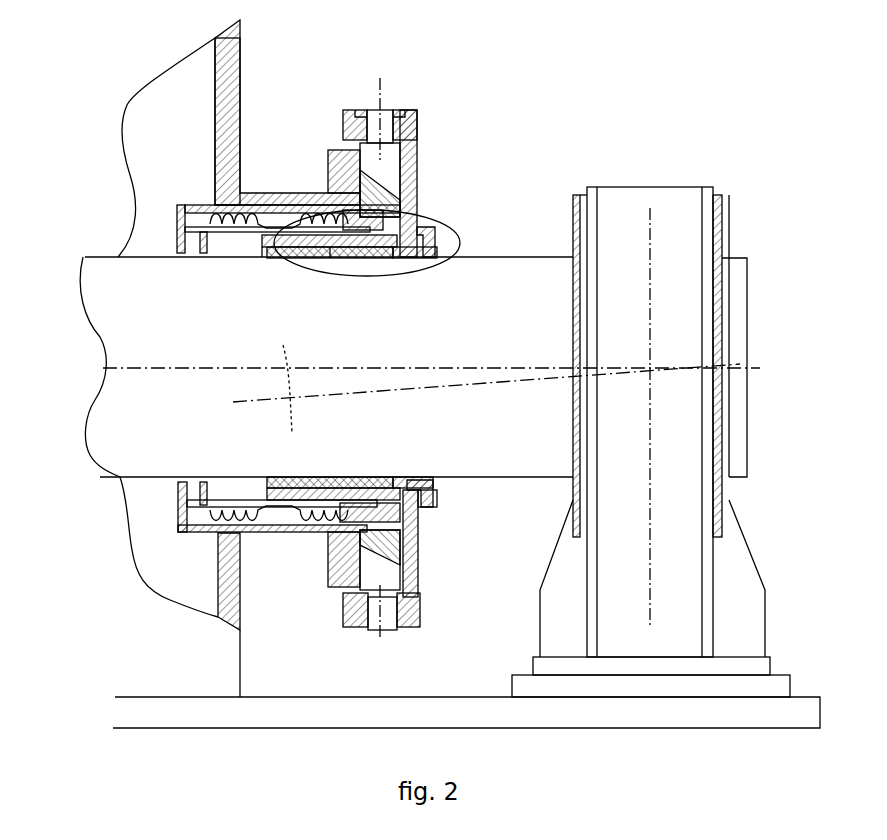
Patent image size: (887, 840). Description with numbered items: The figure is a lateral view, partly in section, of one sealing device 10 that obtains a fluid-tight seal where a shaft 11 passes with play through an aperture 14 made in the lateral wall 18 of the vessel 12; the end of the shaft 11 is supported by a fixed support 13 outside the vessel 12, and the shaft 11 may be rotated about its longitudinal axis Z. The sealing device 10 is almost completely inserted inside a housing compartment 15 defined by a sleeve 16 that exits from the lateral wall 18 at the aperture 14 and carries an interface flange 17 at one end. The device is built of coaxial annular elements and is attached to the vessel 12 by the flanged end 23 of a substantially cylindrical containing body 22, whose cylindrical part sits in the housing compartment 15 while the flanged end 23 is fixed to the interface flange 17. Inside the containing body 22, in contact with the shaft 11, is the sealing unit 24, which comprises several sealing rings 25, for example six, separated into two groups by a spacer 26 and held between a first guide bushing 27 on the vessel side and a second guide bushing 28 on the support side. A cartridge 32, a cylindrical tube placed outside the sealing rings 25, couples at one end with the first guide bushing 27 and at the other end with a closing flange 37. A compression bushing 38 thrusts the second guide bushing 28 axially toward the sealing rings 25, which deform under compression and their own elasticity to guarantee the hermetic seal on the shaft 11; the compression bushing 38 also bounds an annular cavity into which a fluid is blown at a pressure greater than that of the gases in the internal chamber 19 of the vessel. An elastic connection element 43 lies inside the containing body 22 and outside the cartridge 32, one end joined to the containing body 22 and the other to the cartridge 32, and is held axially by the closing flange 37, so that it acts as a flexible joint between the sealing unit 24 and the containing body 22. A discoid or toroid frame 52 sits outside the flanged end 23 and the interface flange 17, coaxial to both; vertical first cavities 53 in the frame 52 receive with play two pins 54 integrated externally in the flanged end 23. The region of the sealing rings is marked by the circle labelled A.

The sealing device 10 is at (520, 135).
The shaft 11 is at (118, 338).
The vessel 12 is at (245, 615).
The fixed support 13 is at (678, 205).
The aperture 14 is at (230, 535).
The housing compartment 15 is at (265, 535).
The sleeve 16 is at (293, 535).
The interface flange 17 is at (340, 170).
The lateral wall 18 is at (232, 38).
The internal chamber 19 is at (215, 122).
The containing body 22 is at (178, 203).
The flanged end 23 is at (390, 158).
The sealing unit 24 is at (255, 245).
The sealing rings 25 is at (292, 258).
The spacer 26 is at (335, 258).
The first guide bushing 27 is at (265, 480).
The second guide bushing 28 is at (385, 480).
The cartridge 32 is at (285, 248).
The closing flange 37 is at (393, 222).
The compression bushing 38 is at (426, 240).
The elastic connection element 43 is at (255, 218).
The frame 52 is at (405, 120).
The first cavities 53 is at (385, 105).
The pins 54 is at (355, 105).
The detail region A is at (428, 263).
The longitudinal axis Z is at (758, 366).